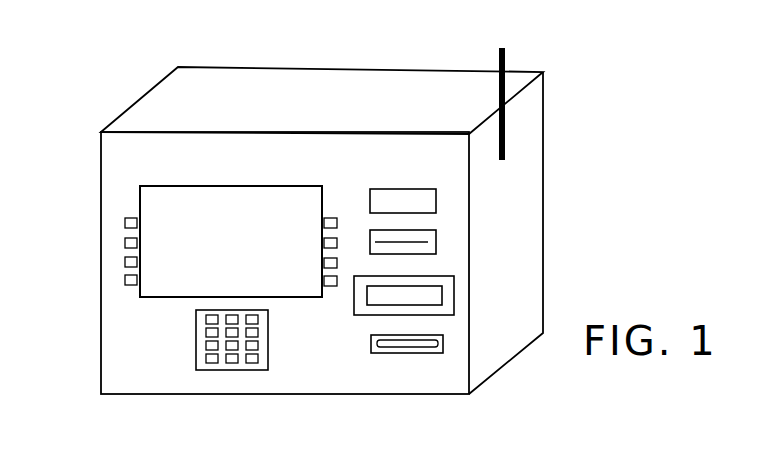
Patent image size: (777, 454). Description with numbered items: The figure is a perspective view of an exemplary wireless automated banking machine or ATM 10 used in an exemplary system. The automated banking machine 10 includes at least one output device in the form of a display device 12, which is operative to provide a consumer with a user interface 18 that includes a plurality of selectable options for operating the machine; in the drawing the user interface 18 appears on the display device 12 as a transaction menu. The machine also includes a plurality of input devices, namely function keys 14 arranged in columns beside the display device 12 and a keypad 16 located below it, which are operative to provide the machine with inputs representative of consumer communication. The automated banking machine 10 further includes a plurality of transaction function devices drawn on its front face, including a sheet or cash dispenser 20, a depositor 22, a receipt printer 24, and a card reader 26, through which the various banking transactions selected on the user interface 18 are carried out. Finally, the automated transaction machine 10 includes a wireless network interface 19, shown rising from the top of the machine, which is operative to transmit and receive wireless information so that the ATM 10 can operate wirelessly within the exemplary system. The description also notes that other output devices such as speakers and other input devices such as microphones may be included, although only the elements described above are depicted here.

The automated banking machine 10 is at (543, 155).
The display device 12 is at (140, 201).
The function keys 14 is at (125, 293).
The keypad 16 is at (230, 372).
The user interface 18 is at (165, 191).
The wireless network interface 19 is at (505, 58).
The cash dispenser 20 is at (454, 290).
The depositor 22 is at (443, 343).
The receipt printer 24 is at (436, 201).
The card reader 26 is at (436, 241).